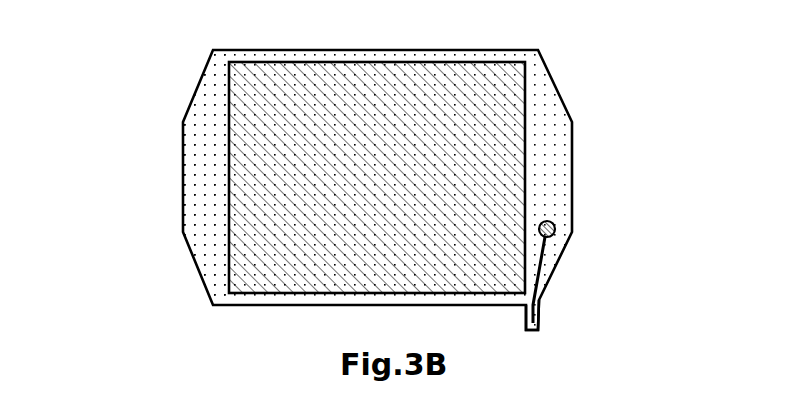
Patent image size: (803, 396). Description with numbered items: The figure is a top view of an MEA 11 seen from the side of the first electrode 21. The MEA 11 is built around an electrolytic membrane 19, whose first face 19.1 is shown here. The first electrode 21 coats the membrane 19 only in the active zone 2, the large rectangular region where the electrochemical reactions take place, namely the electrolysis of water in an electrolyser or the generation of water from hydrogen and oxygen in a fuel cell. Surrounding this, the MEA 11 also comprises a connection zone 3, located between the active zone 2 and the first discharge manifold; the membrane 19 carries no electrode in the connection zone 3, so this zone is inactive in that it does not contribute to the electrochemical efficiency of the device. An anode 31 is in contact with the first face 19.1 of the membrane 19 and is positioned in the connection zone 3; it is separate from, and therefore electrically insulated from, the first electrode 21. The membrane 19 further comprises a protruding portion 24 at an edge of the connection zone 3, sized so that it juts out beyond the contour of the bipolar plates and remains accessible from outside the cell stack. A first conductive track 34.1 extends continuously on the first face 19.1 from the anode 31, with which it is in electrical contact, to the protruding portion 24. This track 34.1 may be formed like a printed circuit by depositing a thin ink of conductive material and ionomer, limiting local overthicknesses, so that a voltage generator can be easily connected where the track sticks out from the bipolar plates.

The MEA 11 is at (362, 168).
The electrolytic membrane 19 is at (334, 168).
The first face 19.1 is at (212, 194).
The active zone 2 is at (377, 149).
The first electrode 21 is at (410, 92).
The connection zone 3 is at (542, 123).
The anode 31 is at (555, 228).
The first conductive track 34.1 is at (537, 268).
The protruding portion 24 is at (538, 318).